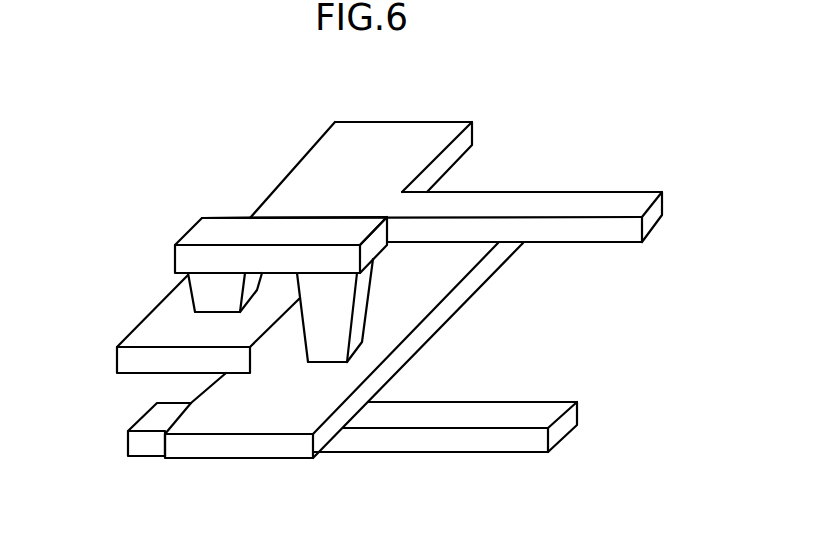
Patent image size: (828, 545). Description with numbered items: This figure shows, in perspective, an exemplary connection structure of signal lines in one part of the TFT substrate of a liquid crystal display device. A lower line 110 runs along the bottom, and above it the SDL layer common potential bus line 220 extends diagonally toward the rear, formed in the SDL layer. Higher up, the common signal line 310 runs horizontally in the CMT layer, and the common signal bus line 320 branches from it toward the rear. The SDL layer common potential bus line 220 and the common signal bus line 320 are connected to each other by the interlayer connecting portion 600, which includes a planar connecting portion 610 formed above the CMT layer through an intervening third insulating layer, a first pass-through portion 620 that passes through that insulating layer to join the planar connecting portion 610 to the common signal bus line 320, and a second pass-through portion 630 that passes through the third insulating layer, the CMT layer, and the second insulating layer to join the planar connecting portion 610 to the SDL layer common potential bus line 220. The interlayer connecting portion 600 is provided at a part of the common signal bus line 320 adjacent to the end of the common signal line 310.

The lower conductive line 110 is at (490, 455).
The SDL layer common potential bus line 220 is at (480, 288).
The common signal line 310 is at (597, 191).
The common signal bus line 320 is at (420, 121).
The interlayer connecting portion 600 is at (267, 198).
The planar connecting portion 610 is at (257, 230).
The first pass-through portion 620 is at (205, 288).
The second pass-through portion 630 is at (340, 308).